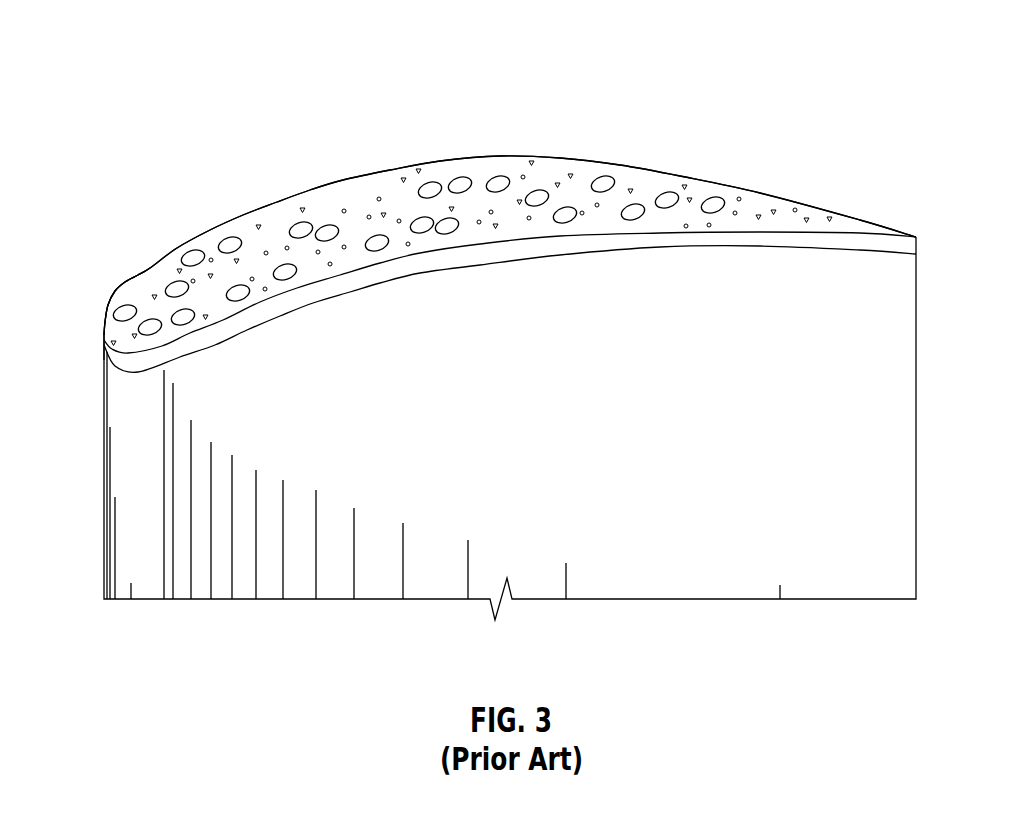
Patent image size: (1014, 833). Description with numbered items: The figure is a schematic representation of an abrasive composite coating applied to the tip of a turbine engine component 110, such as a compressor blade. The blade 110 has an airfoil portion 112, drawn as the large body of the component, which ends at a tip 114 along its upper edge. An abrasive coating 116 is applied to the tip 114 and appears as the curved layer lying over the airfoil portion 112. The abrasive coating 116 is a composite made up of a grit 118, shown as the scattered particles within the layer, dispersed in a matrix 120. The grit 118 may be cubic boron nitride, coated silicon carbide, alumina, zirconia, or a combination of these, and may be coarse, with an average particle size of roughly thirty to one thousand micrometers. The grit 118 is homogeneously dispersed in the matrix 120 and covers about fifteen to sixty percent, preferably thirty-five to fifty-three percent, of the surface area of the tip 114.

The turbine engine component 110 is at (872, 50).
The airfoil portion 112 is at (567, 349).
The tip 114 is at (117, 288).
The abrasive coating 116 is at (560, 160).
The grit 118 is at (286, 268).
The matrix 120 is at (747, 188).